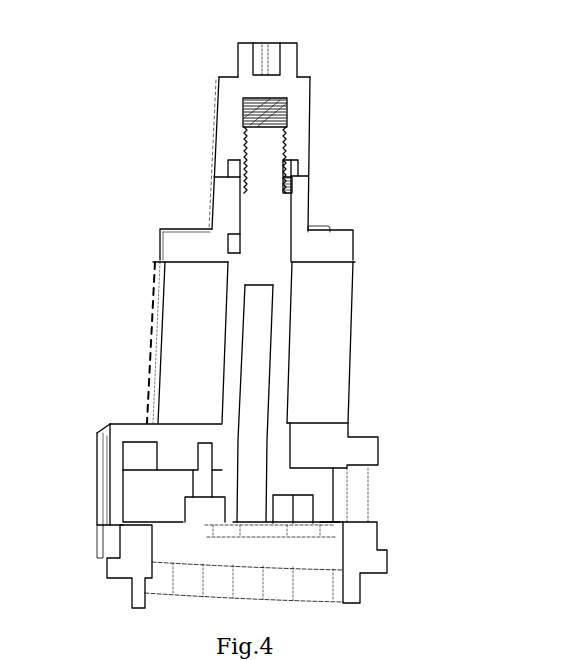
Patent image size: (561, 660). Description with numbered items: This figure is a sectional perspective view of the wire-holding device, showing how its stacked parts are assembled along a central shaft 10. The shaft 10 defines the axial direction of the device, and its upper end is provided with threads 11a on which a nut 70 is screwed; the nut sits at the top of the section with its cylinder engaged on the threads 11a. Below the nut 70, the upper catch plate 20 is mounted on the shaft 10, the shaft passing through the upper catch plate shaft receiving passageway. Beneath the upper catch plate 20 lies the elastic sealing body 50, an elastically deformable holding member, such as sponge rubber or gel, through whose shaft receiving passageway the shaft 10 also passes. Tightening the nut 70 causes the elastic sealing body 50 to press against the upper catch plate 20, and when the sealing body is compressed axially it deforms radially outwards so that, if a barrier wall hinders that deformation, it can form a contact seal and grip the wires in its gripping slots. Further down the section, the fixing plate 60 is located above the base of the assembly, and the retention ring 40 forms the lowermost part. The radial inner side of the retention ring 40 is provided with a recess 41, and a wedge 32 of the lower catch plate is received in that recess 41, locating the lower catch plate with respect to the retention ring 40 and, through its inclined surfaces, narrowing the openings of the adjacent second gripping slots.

The nut 70 is at (300, 98).
The threads 11a is at (286, 147).
The shaft 10 is at (270, 240).
The upper catch plate 20 is at (335, 245).
The elastic sealing body 50 is at (322, 323).
The fixing plate 60 is at (325, 443).
The recess 41 is at (128, 474).
The wedge 32 is at (130, 500).
The retention ring 40 is at (363, 542).